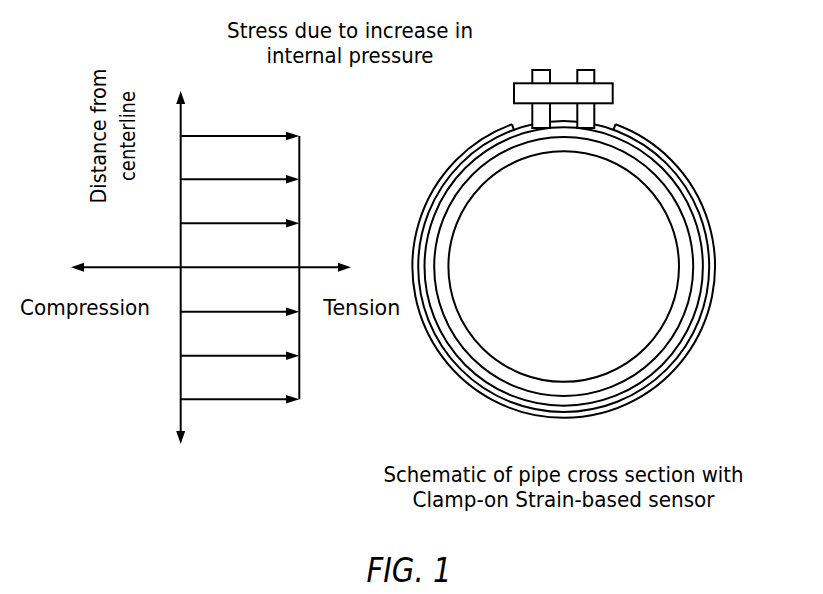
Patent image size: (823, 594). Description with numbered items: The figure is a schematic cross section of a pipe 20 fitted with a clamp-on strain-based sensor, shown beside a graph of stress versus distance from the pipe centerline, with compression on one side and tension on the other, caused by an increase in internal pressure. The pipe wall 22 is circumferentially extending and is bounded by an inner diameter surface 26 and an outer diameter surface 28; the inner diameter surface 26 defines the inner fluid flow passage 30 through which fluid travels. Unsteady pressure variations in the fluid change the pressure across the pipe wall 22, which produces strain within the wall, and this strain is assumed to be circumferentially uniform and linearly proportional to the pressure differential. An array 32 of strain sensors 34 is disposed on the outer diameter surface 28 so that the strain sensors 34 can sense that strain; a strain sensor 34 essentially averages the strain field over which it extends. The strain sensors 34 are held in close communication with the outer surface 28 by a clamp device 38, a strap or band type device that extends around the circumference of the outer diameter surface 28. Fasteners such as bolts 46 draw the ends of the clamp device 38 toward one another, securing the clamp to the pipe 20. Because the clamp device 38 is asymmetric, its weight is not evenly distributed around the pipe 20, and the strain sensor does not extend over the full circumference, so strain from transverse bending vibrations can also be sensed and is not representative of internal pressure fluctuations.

The pipe 20 is at (610, 266).
The pipe wall 22 is at (675, 320).
The inner diameter surface 26 is at (530, 378).
The outer diameter surface 28 is at (655, 370).
The inner fluid flow passage 30 is at (552, 265).
The array of strain sensors 32 is at (607, 216).
The strain sensor 34 is at (687, 175).
The clamp device 38 is at (608, 122).
The bolt 46 is at (565, 80).